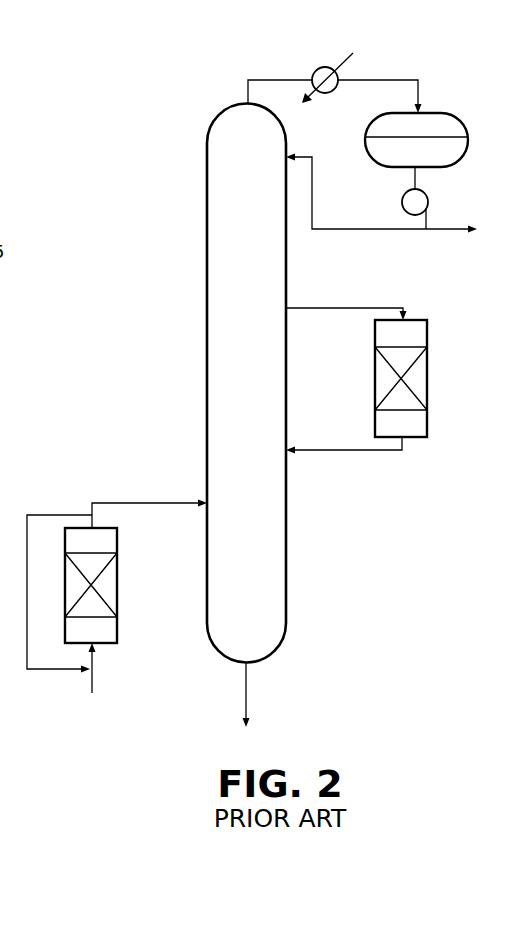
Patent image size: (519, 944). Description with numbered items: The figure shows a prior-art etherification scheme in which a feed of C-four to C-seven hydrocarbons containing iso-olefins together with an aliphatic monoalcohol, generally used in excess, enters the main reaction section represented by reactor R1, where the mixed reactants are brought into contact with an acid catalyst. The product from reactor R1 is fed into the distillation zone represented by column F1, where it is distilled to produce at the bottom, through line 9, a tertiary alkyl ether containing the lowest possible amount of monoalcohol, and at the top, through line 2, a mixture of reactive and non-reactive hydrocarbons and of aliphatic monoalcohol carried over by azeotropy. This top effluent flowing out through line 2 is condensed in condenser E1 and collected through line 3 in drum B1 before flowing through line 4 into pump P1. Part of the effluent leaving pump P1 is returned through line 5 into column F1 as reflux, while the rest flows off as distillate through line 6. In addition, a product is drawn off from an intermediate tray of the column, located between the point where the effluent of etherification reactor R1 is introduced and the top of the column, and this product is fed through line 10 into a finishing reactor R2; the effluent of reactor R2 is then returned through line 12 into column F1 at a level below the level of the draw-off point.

The line 2 is at (263, 79).
The line 3 is at (390, 80).
The line 4 is at (418, 179).
The line 5 is at (338, 229).
The line 6 is at (453, 229).
The line 9 is at (242, 690).
The line 10 is at (335, 308).
The line 12 is at (337, 450).
The column F1 is at (246, 383).
The condenser E1 is at (319, 78).
The drum B1 is at (404, 136).
The pump P1 is at (401, 204).
The reactor R1 is at (117, 597).
The reactor R2 is at (383, 378).